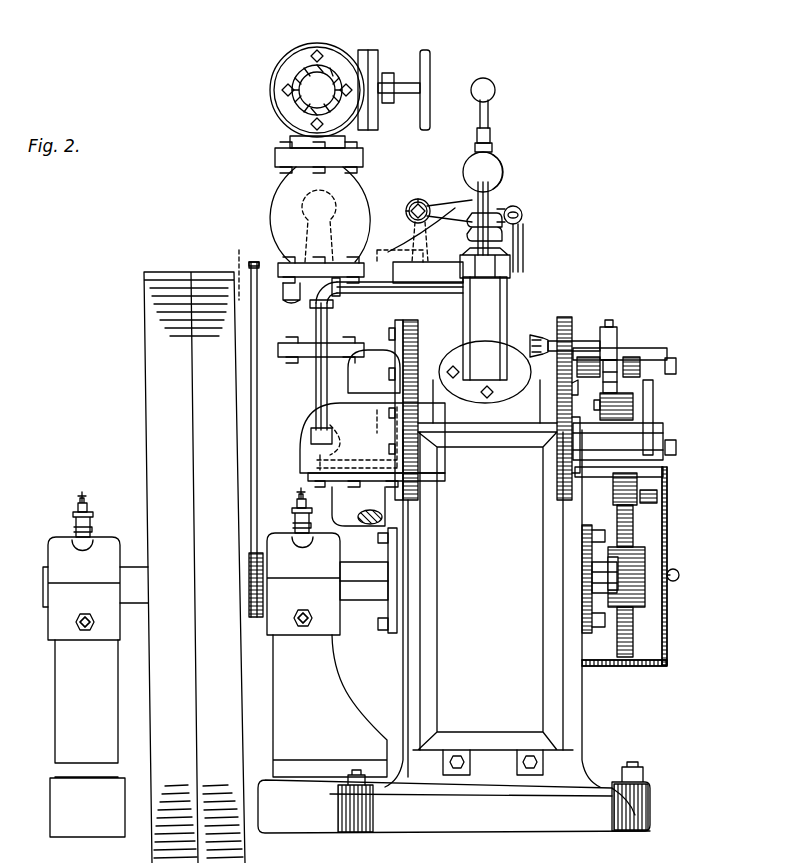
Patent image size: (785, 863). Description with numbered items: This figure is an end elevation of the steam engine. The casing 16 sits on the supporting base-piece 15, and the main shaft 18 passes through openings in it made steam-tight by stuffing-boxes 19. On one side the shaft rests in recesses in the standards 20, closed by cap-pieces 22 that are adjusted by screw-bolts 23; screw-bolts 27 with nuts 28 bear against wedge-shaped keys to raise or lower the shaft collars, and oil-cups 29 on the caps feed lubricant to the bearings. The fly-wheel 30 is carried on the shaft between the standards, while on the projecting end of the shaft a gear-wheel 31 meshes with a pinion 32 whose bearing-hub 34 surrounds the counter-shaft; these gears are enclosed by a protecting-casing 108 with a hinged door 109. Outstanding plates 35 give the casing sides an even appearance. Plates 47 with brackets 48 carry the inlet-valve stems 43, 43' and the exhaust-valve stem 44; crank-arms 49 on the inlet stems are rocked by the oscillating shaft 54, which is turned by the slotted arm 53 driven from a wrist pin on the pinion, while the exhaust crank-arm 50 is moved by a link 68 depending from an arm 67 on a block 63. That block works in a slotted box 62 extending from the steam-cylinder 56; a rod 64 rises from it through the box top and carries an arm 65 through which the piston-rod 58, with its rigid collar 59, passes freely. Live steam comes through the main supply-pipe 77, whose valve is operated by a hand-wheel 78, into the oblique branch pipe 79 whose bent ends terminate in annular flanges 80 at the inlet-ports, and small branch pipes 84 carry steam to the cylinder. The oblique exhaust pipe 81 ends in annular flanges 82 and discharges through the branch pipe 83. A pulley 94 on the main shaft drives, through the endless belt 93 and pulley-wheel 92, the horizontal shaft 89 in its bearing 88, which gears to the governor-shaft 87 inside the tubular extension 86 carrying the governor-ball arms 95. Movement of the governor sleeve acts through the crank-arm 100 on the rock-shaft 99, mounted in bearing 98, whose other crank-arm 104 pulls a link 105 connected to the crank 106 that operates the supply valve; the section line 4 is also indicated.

The shaft 4 is at (239, 260).
The supporting base-piece 15 is at (554, 822).
The casing 16 is at (430, 680).
The shaft 18 is at (364, 581).
The stuffing-boxes 19 is at (390, 590).
The standards 20 is at (57, 735).
The cap-pieces 22 is at (50, 545).
The screw-bolts 23 is at (92, 528).
The screw-bolts 27 is at (80, 630).
The nuts 28 is at (92, 630).
The oil-cups 29 is at (90, 508).
The fly-wheel 30 is at (147, 406).
The gear-wheel 31 is at (640, 638).
The pinion 32 is at (638, 487).
The bearing-hub 34 is at (630, 505).
The outstanding plates 35 is at (402, 655).
The inlet-valve stem 43 is at (694, 450).
The inlet-valve stem 43' is at (687, 360).
The exhaust-valve stem 44 is at (630, 345).
The plates 47 is at (563, 317).
The brackets 48 is at (625, 347).
The crank-arm 49 is at (653, 425).
The crank-arm 50 is at (623, 400).
The arm 53 is at (658, 498).
The oscillating shaft 54 is at (636, 410).
The steam-cylinder 56 is at (510, 300).
The piston-rod 58 is at (490, 204).
The rigid collar 59 is at (525, 240).
The slotted box 62 is at (486, 400).
The block 63 is at (535, 333).
The rod 64 is at (520, 225).
The arm 65 is at (522, 210).
The arm 67 is at (590, 340).
The link 68 is at (568, 384).
The main supply-pipe 77 is at (325, 76).
The hand-wheel 78 is at (430, 56).
The branch pipe 79 is at (300, 452).
The annular flanges 80 is at (419, 482).
The exhaust pipe 81 is at (366, 415).
The annular flanges 82 is at (412, 354).
The branch pipe 83 is at (383, 514).
The small branch pipes 84 is at (316, 383).
The tubular extension 86 is at (498, 185).
The governor-shaft 87 is at (489, 122).
The bearing 88 is at (372, 296).
The horizontal shaft 89 is at (268, 296).
The pulley-wheel 92 is at (258, 266).
The endless belt 93 is at (251, 390).
The pulley 94 is at (250, 605).
The governor-ball arms 95 is at (490, 100).
The bearing 98 is at (419, 202).
The rock-shaft 99 is at (410, 204).
The crank-arm 100 is at (430, 220).
The crank-arm 104 is at (408, 212).
The link 105 is at (398, 262).
The crank 106 is at (315, 233).
The protecting-casing 108 is at (627, 668).
The hinged door 109 is at (668, 552).